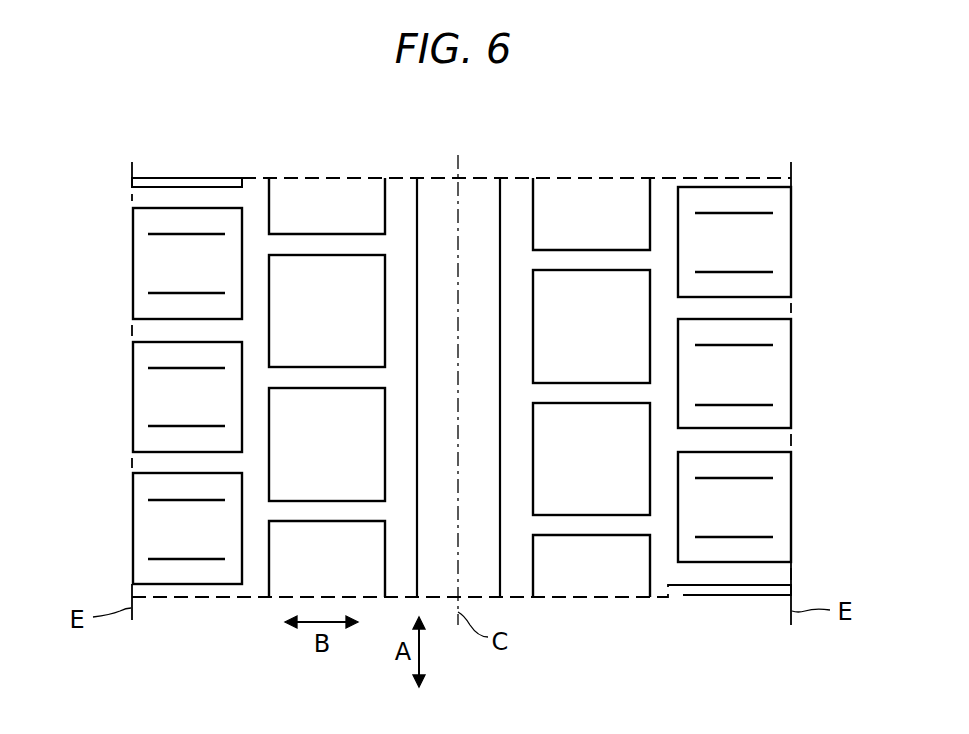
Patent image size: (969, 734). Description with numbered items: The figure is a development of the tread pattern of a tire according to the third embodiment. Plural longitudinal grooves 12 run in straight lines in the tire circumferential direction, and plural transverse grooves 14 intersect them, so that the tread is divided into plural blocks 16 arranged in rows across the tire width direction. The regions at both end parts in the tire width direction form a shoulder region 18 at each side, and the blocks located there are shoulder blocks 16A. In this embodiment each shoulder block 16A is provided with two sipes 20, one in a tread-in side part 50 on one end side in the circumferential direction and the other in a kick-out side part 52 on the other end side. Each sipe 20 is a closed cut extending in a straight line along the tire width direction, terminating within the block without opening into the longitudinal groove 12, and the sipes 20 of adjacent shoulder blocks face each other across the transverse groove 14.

The longitudinal groove 12 is at (258, 192).
The transverse groove 14 is at (146, 331).
The block 16 is at (607, 577).
The shoulder block 16A is at (203, 579).
The shoulder region 18 is at (186, 156).
The sipe 20 is at (155, 234).
The tread-in side part 50 is at (148, 306).
The kick-out side part 52 is at (150, 353).